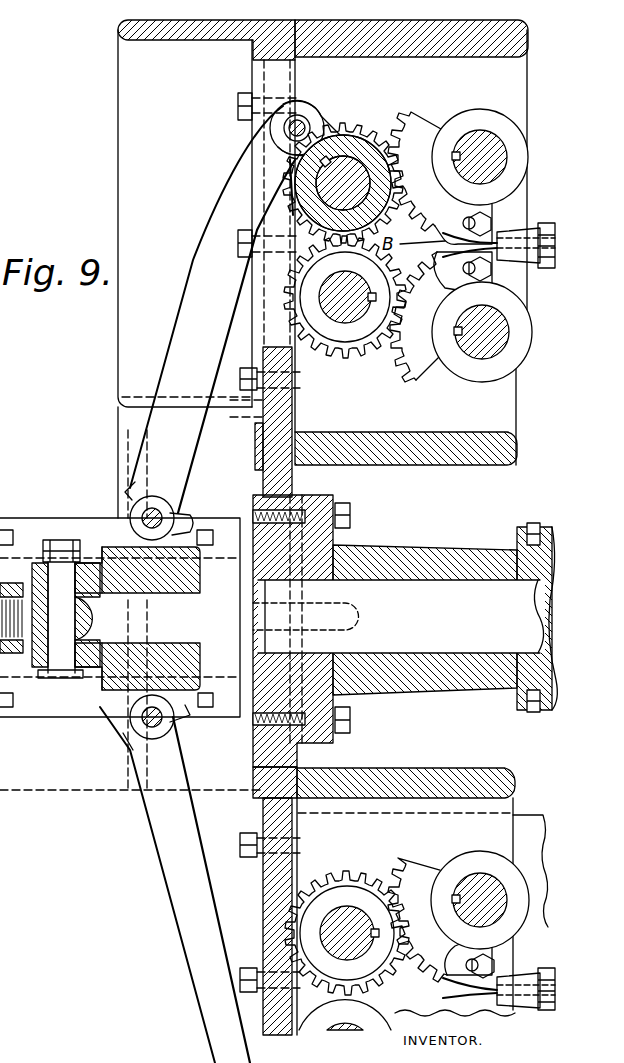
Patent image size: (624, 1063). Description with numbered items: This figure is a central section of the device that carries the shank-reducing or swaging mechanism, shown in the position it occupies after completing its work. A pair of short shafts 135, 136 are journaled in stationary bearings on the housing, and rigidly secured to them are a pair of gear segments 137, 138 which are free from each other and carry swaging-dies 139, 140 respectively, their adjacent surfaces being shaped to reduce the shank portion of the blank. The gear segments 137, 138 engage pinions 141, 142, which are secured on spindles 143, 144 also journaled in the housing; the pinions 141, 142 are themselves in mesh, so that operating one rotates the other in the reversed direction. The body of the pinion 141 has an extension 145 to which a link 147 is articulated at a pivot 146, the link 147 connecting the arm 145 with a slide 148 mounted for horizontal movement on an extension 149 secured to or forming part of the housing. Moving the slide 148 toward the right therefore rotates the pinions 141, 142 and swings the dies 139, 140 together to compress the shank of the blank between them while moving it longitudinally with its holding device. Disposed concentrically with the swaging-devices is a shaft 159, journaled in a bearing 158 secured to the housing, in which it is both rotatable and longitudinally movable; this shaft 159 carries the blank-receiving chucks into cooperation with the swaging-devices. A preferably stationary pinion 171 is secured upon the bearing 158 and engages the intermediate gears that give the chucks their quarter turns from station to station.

The short shaft 135 is at (479, 140).
The short shaft 136 is at (482, 350).
The gear segment 137 is at (421, 118).
The gear segment 138 is at (445, 366).
The swaging-die 139 is at (483, 230).
The swaging-die 140 is at (490, 262).
The pinion 141 is at (377, 135).
The pinion 142 is at (351, 345).
The spindle 143 is at (340, 160).
The spindle 144 is at (338, 313).
The extension 145 is at (325, 122).
The articulation 146 is at (284, 128).
The link 147 is at (210, 215).
The slide 148 is at (118, 575).
The extension 149 is at (5, 515).
The bearing 158 is at (378, 558).
The shaft 159 is at (437, 592).
The stationary pinion 171 is at (540, 713).